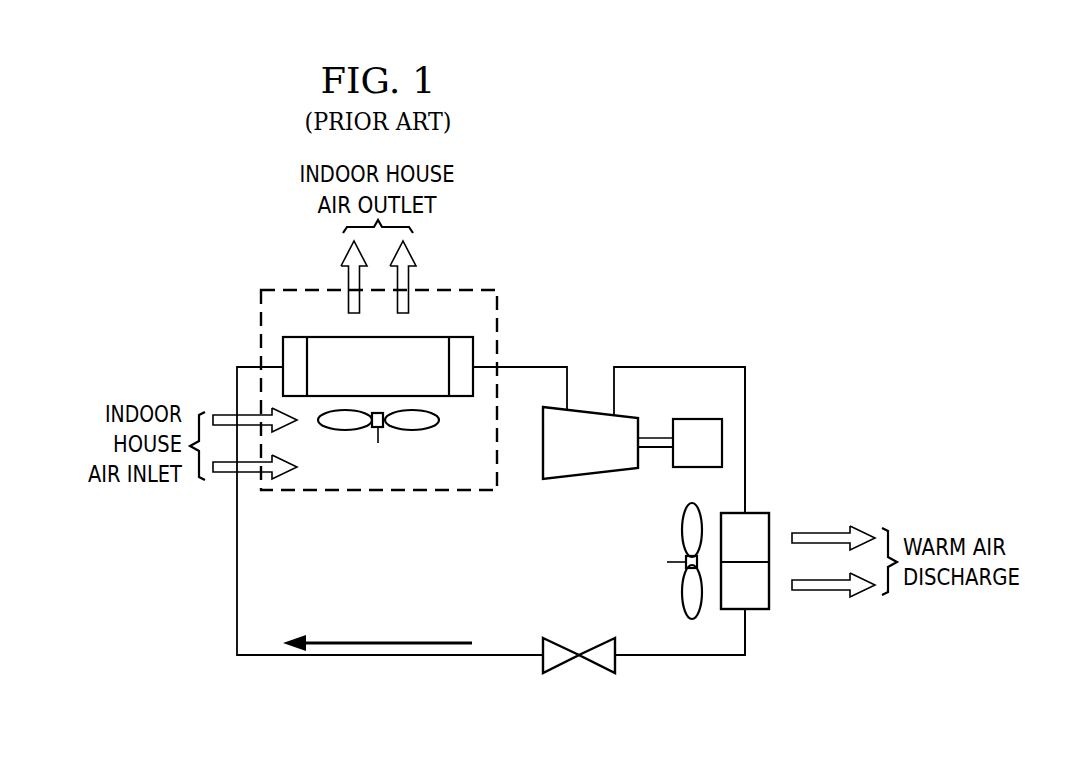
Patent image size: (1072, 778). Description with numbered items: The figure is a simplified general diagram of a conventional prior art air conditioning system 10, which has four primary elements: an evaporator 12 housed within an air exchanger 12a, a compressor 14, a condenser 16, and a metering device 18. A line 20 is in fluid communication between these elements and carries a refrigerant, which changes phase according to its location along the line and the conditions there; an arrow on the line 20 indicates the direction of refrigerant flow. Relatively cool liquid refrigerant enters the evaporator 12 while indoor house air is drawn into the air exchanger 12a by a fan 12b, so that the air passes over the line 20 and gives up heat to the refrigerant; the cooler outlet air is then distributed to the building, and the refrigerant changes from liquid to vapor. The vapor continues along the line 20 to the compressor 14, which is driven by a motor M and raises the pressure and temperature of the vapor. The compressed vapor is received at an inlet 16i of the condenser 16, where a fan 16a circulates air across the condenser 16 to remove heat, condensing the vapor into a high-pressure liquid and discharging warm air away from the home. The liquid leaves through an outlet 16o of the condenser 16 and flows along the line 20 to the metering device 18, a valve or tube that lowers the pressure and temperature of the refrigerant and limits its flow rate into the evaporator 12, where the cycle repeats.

The air conditioning system 10 is at (727, 226).
The evaporator 12 is at (364, 380).
The air exchanger 12a is at (256, 315).
The fan 12b is at (407, 429).
The compressor 14 is at (606, 458).
The condenser 16 is at (756, 513).
The fan 16a is at (682, 533).
The inlet 16i is at (745, 443).
The outlet 16o is at (745, 630).
The metering device 18 is at (563, 668).
The line 20 is at (390, 658).